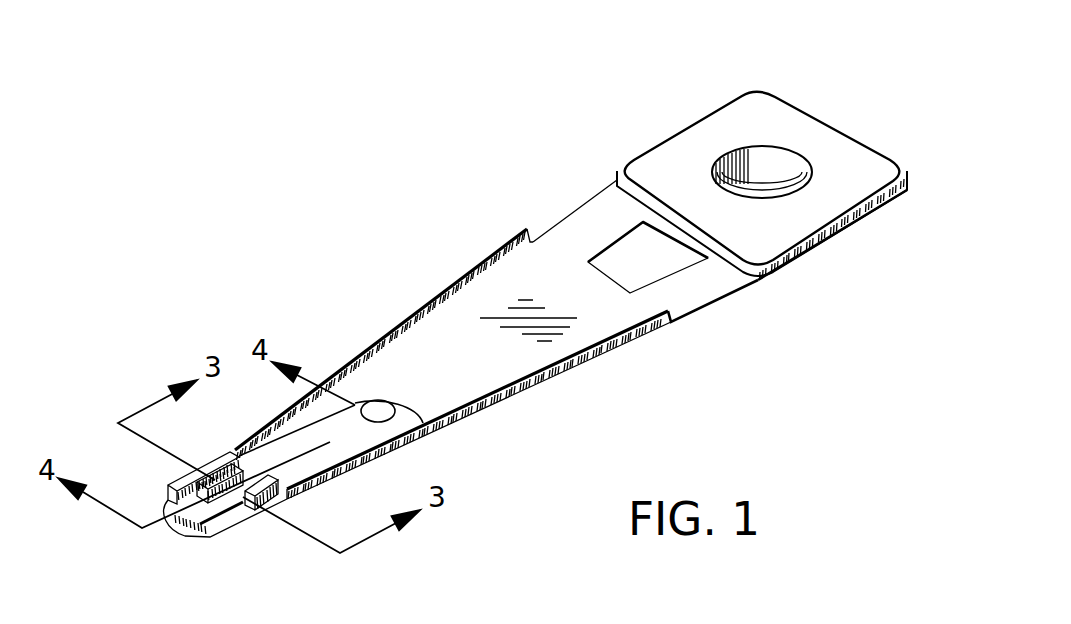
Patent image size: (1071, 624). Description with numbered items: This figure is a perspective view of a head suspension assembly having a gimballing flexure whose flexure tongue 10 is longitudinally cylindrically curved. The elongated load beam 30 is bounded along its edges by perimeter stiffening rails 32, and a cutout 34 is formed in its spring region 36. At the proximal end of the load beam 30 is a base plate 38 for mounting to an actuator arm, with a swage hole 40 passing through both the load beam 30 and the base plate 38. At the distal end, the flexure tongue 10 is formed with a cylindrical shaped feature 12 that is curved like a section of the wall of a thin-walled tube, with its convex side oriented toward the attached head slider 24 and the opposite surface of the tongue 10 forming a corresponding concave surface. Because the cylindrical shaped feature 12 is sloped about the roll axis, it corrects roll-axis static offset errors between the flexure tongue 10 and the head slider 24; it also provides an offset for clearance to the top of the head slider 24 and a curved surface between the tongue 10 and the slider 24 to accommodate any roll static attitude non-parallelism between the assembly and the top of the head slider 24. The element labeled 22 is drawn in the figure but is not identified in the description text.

The flexure tongue 10 is at (210, 531).
The cylindrical shaped feature 12 is at (224, 510).
The contact block 22 is at (375, 549).
The head slider 24 is at (178, 487).
The load beam 30 is at (488, 300).
The perimeter stiffening rails 32 is at (338, 373).
The cutout 34 is at (643, 253).
The spring region 36 is at (560, 220).
The base plate 38 is at (830, 208).
The swage hole 40 is at (757, 142).